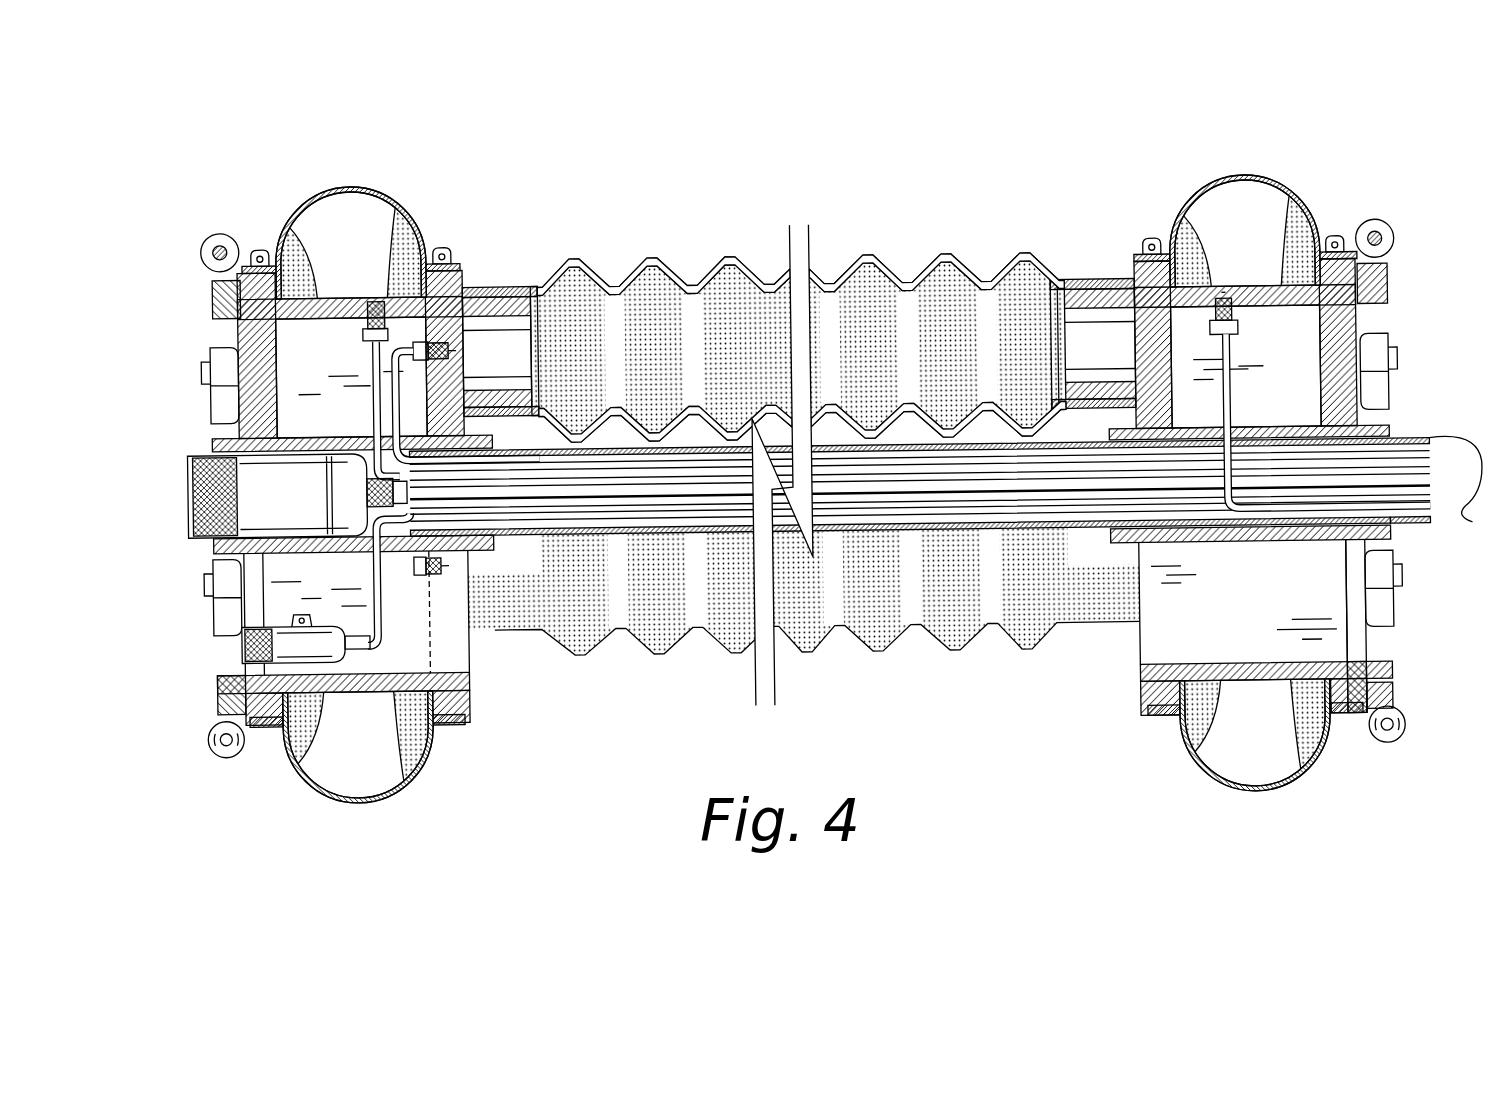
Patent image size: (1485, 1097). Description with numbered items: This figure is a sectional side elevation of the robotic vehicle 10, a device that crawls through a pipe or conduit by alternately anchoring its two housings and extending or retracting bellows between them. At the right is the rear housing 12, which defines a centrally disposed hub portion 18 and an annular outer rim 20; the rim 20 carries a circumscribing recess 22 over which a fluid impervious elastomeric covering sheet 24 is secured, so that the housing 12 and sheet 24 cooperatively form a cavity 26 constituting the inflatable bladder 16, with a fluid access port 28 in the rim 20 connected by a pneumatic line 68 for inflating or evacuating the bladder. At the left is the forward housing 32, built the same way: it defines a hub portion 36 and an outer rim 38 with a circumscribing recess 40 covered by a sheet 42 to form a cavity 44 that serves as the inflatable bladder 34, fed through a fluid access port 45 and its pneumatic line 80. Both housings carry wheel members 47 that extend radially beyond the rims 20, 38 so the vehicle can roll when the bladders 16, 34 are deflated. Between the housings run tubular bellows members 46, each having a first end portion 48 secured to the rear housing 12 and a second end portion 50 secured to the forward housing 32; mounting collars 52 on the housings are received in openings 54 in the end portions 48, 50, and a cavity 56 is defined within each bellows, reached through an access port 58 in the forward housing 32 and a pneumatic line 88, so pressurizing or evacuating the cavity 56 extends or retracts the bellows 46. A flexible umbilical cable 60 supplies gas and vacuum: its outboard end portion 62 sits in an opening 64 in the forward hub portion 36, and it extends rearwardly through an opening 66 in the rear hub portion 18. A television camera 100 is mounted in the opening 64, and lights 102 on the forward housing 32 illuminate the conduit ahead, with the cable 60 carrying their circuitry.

The robotic vehicle 10 is at (974, 110).
The rear housing 12 is at (1232, 621).
The inflatable bladder 16 is at (1251, 480).
The hub portion 18 is at (1387, 445).
The annular outer rim 20 is at (1363, 298).
The circumscribing recess 22 is at (1300, 227).
The covering sheet 24 is at (1217, 186).
The cavity 26 is at (1230, 256).
The fluid access port 28 is at (1240, 324).
The forward housing 32 is at (294, 381).
The inflatable bladder 34 is at (353, 488).
The hub portion 36 is at (210, 529).
The annular outer rim 38 is at (240, 290).
The circumscribing recess 40 is at (293, 226).
The covering sheet 42 is at (390, 188).
The cavity 44 is at (336, 261).
The fluid access port 45 is at (367, 324).
The tubular bellows members 46 is at (753, 252).
The wheel members 47 is at (213, 244).
The first end portion 48 is at (1087, 284).
The second end portion 50 is at (513, 283).
The mounting collars 52 is at (555, 425).
The openings 54 is at (485, 283).
The cavity 56 is at (642, 370).
The access port 58 is at (397, 411).
The flexible umbilical cable 60 is at (1463, 456).
The outboard end portion 62 is at (484, 536).
The opening 64 is at (532, 345).
The opening 66 is at (1391, 531).
The pneumatic line 68 is at (1237, 393).
The pneumatic line 80 is at (293, 345).
The pneumatic line 88 is at (243, 420).
The television camera 100 is at (265, 505).
The lights 102 is at (220, 642).